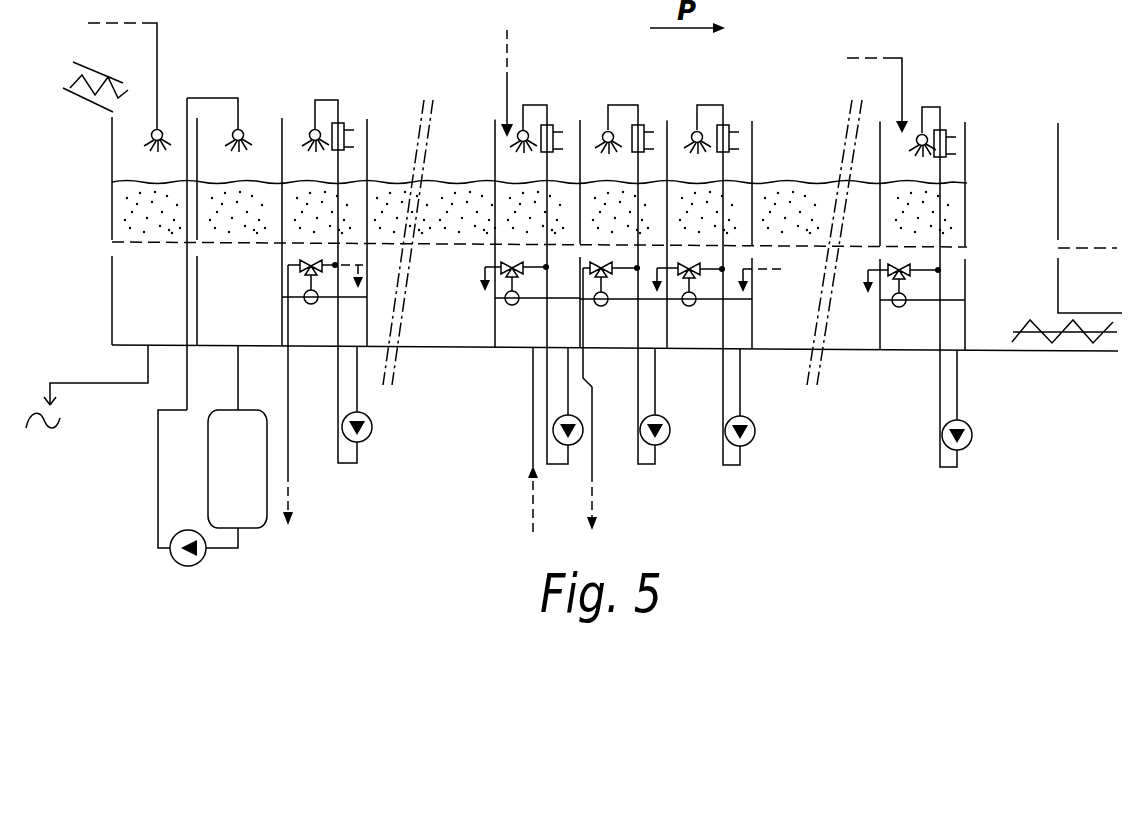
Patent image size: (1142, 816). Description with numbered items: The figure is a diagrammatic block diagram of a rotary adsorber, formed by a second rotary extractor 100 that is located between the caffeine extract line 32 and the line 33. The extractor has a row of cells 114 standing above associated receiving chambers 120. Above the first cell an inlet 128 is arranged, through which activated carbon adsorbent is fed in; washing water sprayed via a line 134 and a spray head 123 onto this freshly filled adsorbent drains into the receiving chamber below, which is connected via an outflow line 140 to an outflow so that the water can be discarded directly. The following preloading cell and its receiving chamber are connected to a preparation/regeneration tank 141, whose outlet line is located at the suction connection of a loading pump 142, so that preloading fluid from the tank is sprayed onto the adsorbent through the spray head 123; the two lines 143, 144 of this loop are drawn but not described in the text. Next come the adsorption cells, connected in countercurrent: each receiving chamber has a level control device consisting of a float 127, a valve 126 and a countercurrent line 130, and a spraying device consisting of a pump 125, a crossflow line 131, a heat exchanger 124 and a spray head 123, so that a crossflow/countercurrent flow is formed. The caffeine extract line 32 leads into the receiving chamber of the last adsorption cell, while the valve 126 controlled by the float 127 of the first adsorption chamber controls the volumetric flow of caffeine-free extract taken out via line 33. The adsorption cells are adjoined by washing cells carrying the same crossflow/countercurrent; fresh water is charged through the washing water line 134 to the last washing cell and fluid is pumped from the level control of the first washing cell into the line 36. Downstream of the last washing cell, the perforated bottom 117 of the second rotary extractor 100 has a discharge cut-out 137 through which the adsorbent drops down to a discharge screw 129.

The caffeine extract line 32 is at (508, 90).
The line 33 is at (289, 473).
The line 36 is at (593, 453).
The second rotary extractor 100 is at (448, 463).
The cell 114 is at (133, 148).
The perforated bottom 117 is at (1083, 247).
The receiving chamber 120 is at (125, 285).
The spray head 123 is at (157, 128).
The heat exchanger 124 is at (338, 123).
The pump 125 is at (372, 427).
The valve 126 is at (300, 263).
The float 127 is at (303, 302).
The inlet 128 is at (83, 102).
The discharge screw 129 is at (1070, 353).
The countercurrent line 130 is at (356, 272).
The crossflow line 131 is at (340, 168).
The washing water line 134 is at (158, 47).
The discharge cut-out 137 is at (1010, 253).
The outflow line 140 is at (98, 384).
The preparation/regeneration tank 141 is at (249, 479).
The loading pump 142 is at (172, 557).
The return line 143 is at (238, 392).
The supply line 144 is at (188, 370).